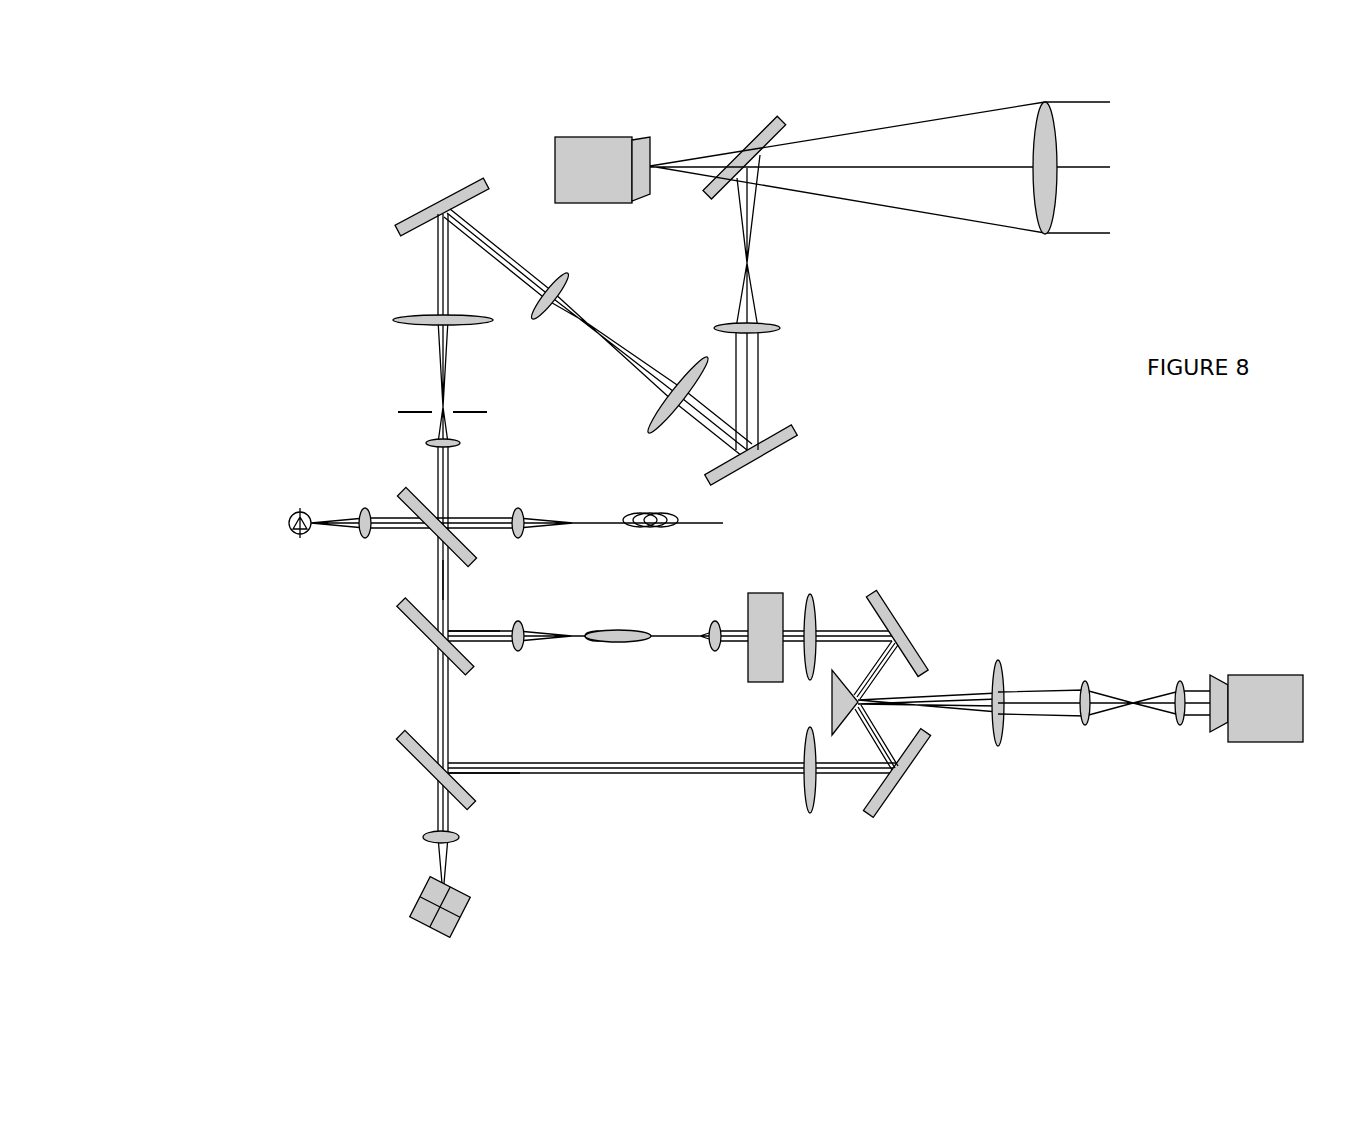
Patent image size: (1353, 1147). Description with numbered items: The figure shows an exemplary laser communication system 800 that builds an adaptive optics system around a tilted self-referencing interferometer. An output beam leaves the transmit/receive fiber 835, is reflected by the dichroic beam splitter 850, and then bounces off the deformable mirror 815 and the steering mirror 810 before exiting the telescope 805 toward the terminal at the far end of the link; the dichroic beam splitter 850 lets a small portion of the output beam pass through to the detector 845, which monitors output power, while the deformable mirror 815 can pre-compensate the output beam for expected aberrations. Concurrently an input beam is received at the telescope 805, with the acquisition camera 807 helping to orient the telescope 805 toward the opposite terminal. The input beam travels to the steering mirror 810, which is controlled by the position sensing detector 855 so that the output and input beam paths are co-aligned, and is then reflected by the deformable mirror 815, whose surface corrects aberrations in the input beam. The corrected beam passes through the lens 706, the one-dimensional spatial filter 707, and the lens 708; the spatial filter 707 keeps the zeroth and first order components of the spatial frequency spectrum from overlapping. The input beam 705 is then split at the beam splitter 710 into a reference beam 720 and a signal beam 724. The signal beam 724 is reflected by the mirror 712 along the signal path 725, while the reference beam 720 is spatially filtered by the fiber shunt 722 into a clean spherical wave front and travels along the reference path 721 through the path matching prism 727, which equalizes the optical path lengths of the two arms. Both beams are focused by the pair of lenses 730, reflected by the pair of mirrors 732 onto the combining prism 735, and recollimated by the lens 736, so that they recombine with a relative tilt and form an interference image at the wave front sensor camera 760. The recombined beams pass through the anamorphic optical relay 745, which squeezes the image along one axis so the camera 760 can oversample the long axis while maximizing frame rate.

The laser communication system 800 is at (1212, 297).
The telescope 805 is at (906, 168).
The acquisition camera 807 is at (600, 186).
The steering mirror 810 is at (783, 455).
The deformable mirror 815 is at (438, 193).
The lens 706 is at (410, 313).
The 1-D spatial filter 707 is at (402, 410).
The lens 708 is at (473, 443).
The detector 845 is at (247, 511).
The transmit/receive fiber 835 is at (612, 549).
The dichroic beam splitter 850 is at (432, 535).
The input beam 705 is at (435, 577).
The beam splitter 710 is at (428, 636).
The mirror 712 is at (428, 769).
The reference beam 720 is at (490, 650).
The reference path 721 is at (670, 666).
The fiber shunt 722 is at (630, 628).
The signal beam 724 is at (503, 783).
The signal path 725 is at (672, 796).
The path matching prism 727 is at (777, 592).
The lenses 730 is at (802, 667).
The mirrors 732 is at (927, 738).
The combining prism 735 is at (837, 733).
The lens 736 is at (1010, 683).
The anamorphic optical relay 745 is at (1133, 710).
The wave front sensor camera 760 is at (1256, 709).
The position sensing detector 855 is at (423, 891).